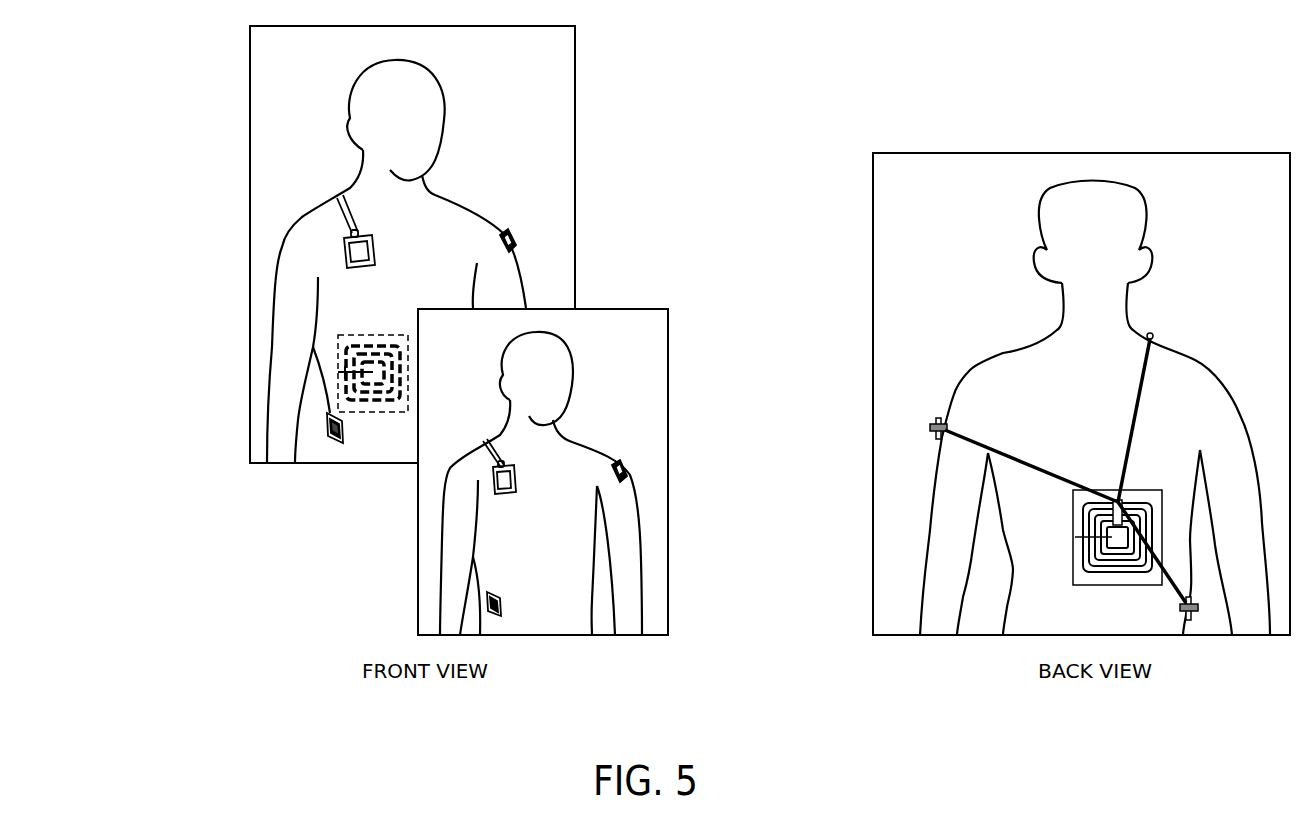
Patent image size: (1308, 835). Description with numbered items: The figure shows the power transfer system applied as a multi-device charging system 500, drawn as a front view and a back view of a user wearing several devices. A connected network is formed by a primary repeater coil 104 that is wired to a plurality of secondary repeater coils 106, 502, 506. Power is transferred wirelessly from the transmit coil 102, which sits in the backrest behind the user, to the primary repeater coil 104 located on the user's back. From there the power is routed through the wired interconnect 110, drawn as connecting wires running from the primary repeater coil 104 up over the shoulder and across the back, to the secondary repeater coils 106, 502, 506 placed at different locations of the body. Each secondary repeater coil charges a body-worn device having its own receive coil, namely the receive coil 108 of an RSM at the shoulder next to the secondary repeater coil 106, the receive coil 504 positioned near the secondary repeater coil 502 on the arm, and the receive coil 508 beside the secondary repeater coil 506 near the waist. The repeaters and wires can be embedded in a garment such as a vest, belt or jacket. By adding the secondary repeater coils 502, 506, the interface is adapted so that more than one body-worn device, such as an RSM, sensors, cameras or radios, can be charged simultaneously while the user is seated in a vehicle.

The transmit (TX) coil 102 is at (227, 345).
The primary repeater coil 104 is at (1122, 608).
The secondary repeater coil 106 is at (222, 178).
The receive (RX) coil 108 is at (283, 335).
The wired interconnect 110 is at (348, 211).
The multi-device charging system 500 is at (929, 756).
The secondary repeater coil 502 is at (626, 324).
The receive (RX) coil 504 is at (578, 258).
The secondary repeater coil 506 is at (313, 514).
The receive (RX) coil 508 is at (266, 518).